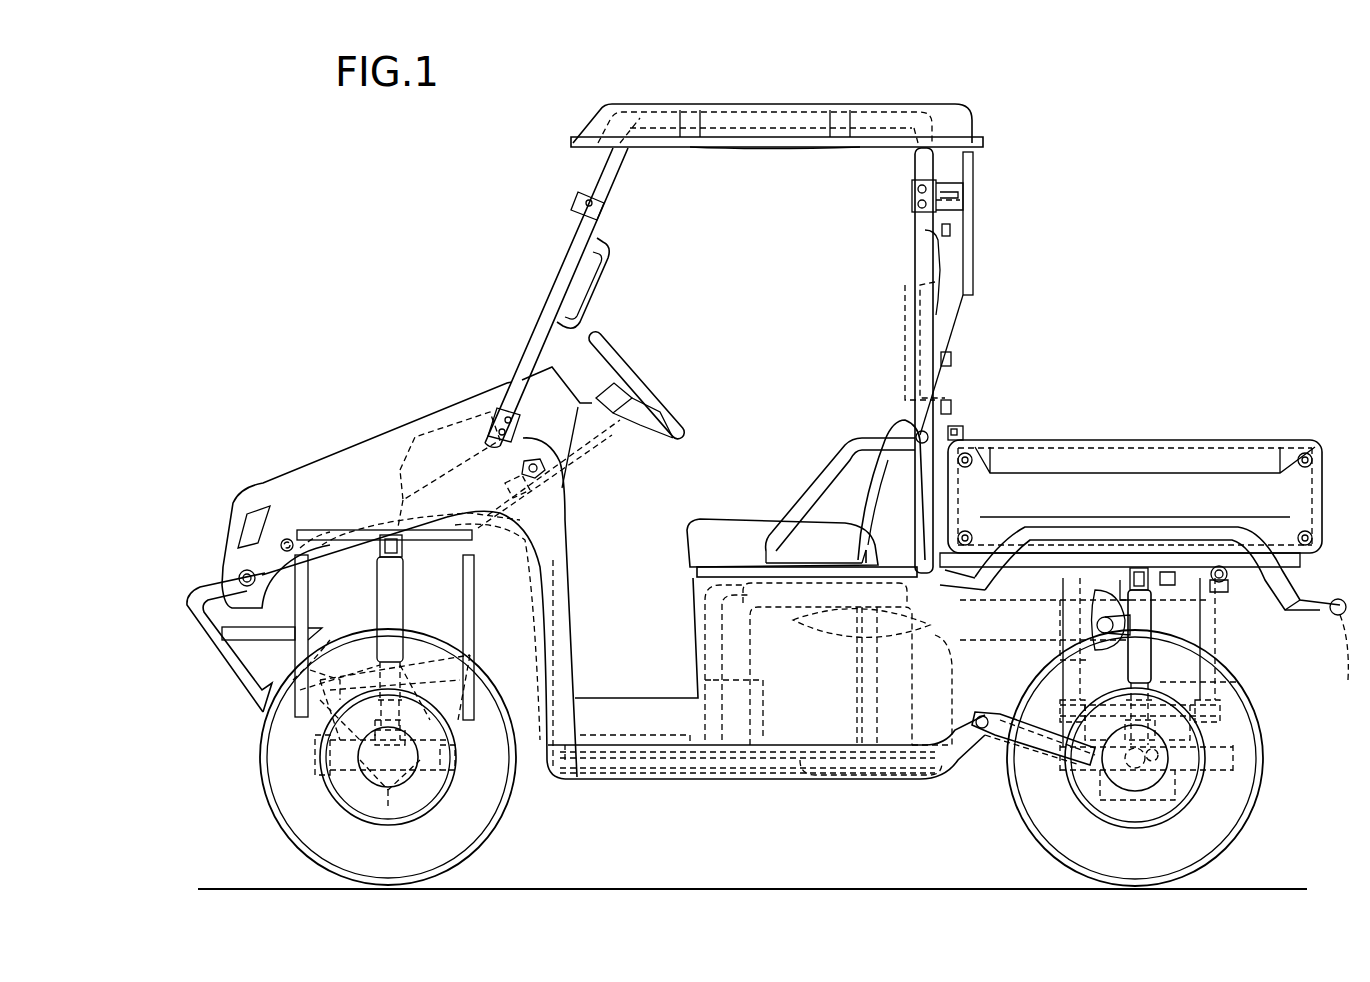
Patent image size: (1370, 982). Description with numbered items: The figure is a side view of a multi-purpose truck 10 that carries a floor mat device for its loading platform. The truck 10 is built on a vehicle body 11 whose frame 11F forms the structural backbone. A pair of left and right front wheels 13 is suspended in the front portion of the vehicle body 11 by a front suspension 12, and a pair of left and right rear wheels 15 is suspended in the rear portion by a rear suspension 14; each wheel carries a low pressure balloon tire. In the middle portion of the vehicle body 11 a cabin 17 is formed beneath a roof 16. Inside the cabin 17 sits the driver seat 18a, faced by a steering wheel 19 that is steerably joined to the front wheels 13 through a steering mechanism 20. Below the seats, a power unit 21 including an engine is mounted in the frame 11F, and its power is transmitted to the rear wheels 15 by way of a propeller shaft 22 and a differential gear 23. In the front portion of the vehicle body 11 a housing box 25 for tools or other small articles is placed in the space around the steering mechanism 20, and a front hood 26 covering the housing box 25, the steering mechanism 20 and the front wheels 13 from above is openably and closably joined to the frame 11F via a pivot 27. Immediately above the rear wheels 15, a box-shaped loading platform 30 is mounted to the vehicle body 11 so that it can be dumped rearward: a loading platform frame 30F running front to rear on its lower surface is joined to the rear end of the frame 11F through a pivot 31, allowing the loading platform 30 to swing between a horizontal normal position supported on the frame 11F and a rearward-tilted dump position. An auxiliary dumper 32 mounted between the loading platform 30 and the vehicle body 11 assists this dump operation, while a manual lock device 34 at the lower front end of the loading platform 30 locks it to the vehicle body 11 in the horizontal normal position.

The multi-purpose truck 10 is at (1062, 228).
The vehicle body 11 is at (855, 786).
The frame 11F is at (1105, 575).
The front suspension 12 is at (378, 606).
The front wheel 13 is at (290, 805).
The rear suspension 14 is at (1160, 604).
The rear wheel 15 is at (1245, 752).
The roof 16 is at (752, 113).
The cabin 17 is at (800, 263).
The driver seat 18a is at (725, 540).
The steering wheel 19 is at (605, 355).
The steering mechanism 20 is at (520, 505).
The power unit 21 is at (780, 717).
The propeller shaft 22 is at (990, 770).
The differential gear 23 is at (1195, 790).
The housing box 25 is at (440, 430).
The front hood 26 is at (325, 470).
The pivot 27 is at (280, 545).
The loading platform 30 is at (1152, 455).
The loading platform frame 30F is at (1185, 560).
The pivot 31 is at (1218, 575).
The auxiliary dumper 32 is at (1225, 688).
The manual lock device 34 is at (948, 560).